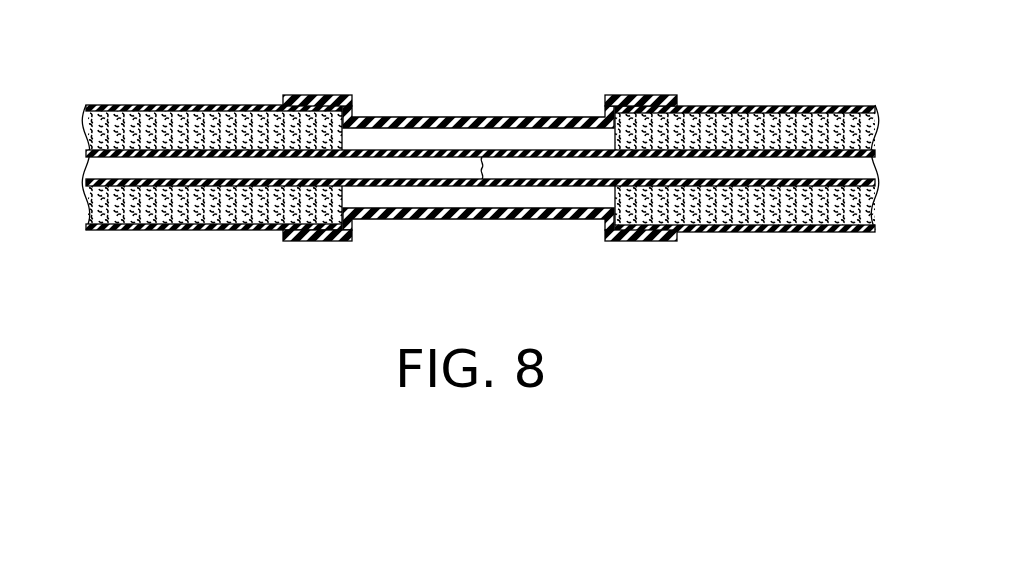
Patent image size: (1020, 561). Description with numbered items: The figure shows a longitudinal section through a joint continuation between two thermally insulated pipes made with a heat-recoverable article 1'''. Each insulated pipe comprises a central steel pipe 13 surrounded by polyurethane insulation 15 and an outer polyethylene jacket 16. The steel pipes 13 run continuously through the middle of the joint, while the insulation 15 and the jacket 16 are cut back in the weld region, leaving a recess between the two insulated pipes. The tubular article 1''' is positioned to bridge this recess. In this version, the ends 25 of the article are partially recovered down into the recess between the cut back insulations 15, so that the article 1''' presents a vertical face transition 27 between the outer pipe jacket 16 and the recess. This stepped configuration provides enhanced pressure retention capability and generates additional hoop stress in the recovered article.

The article 1''' is at (480, 115).
The central steel pipe 13 is at (84, 153).
The polyurethane insulation 15 is at (100, 126).
The outer polyethylene jacket 16 is at (75, 107).
The ends of the article 25 is at (640, 100).
The vertical face transition 27 is at (603, 108).